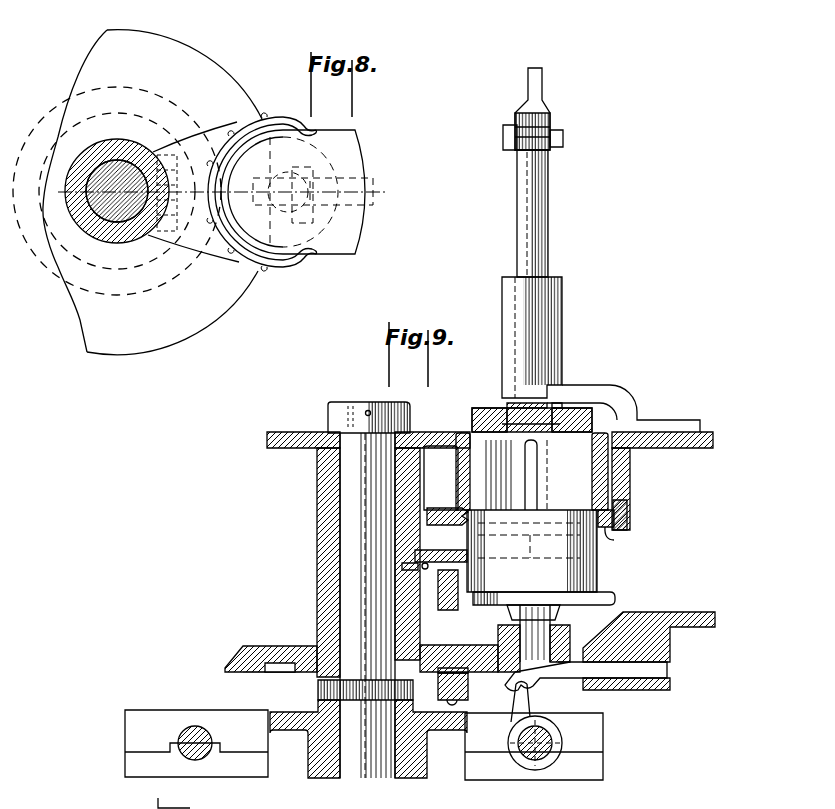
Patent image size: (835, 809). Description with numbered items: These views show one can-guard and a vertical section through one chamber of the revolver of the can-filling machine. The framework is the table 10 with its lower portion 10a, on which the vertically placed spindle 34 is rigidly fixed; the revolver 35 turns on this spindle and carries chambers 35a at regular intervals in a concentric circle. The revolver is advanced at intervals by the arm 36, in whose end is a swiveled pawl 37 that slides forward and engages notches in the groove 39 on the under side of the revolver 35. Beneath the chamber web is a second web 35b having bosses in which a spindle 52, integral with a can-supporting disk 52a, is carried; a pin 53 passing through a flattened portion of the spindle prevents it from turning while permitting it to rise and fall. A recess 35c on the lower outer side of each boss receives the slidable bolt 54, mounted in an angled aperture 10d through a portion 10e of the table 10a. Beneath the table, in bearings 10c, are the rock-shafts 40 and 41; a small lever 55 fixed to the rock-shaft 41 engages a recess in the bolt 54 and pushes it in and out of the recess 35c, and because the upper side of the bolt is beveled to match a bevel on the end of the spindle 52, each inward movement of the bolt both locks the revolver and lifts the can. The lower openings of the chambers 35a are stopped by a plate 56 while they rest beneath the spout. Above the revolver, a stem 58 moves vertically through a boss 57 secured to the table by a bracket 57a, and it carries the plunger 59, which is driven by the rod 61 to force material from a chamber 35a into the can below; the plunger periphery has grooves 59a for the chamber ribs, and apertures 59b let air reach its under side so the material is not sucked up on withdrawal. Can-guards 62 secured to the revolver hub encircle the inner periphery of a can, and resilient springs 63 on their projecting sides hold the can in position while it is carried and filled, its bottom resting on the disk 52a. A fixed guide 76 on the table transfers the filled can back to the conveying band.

In FIG. 9, the table 10 is at (695, 448).
In FIG. 9, the table portion 10a is at (248, 718).
In FIG. 9, the bearings 10c is at (364, 745).
In FIG. 9, the angled aperture 10d is at (660, 692).
In FIG. 9, the portion of table 10e is at (649, 637).
In FIG. 8, the spindle 34 is at (221, 191).
In FIG. 9, the spindle 34 is at (365, 590).
In FIG. 8, the revolver 35 is at (137, 192).
In FIG. 9, the revolver 35 is at (325, 583).
In FIG. 9, the chambers 35a is at (532, 529).
In FIG. 9, the web 35b is at (496, 647).
In FIG. 9, the recess 35c is at (558, 665).
In FIG. 9, the arm 36 is at (468, 694).
In FIG. 9, the swiveled pawl 37 is at (455, 668).
In FIG. 8, the groove 39 is at (117, 196).
In FIG. 9, the rock-shaft 40 is at (190, 736).
In FIG. 9, the rock-shaft 41 is at (527, 764).
In FIG. 9, the spindle 52 is at (534, 633).
In FIG. 9, the can-supporting disk 52a is at (601, 595).
In FIG. 8, the pin 53 is at (293, 192).
In FIG. 9, the pin 53 is at (570, 636).
In FIG. 8, the slidable bolt 54 is at (412, 193).
In FIG. 9, the slidable bolt 54 is at (586, 676).
In FIG. 9, the small lever 55 is at (532, 718).
In FIG. 9, the plate 56 is at (598, 512).
In FIG. 9, the boss 57 is at (532, 337).
In FIG. 9, the bracket 57a is at (623, 406).
In FIG. 9, the stem 58 is at (548, 260).
In FIG. 9, the plunger 59 is at (471, 422).
In FIG. 9, the grooves 59a is at (655, 414).
In FIG. 9, the apertures 59b is at (567, 396).
In FIG. 9, the rod 61 is at (540, 112).
In FIG. 8, the can-guards 62 is at (177, 193).
In FIG. 9, the can-guards 62 is at (435, 539).
In FIG. 8, the resilient springs 63 is at (261, 192).
In FIG. 9, the fixed guide 76 is at (440, 611).